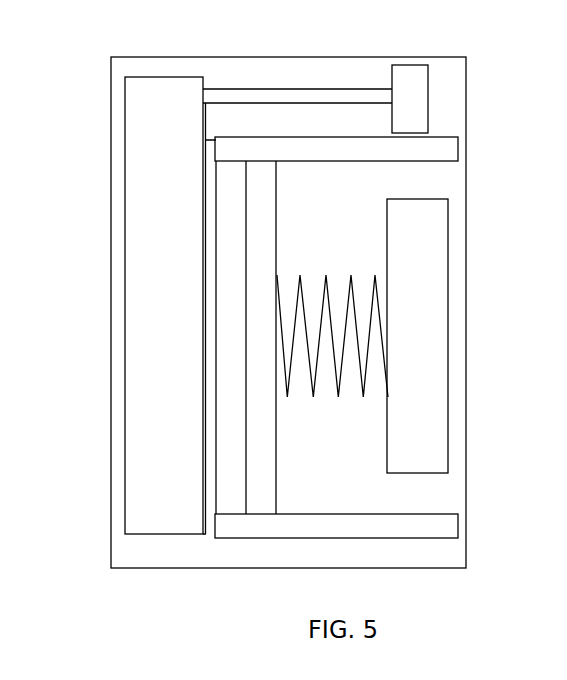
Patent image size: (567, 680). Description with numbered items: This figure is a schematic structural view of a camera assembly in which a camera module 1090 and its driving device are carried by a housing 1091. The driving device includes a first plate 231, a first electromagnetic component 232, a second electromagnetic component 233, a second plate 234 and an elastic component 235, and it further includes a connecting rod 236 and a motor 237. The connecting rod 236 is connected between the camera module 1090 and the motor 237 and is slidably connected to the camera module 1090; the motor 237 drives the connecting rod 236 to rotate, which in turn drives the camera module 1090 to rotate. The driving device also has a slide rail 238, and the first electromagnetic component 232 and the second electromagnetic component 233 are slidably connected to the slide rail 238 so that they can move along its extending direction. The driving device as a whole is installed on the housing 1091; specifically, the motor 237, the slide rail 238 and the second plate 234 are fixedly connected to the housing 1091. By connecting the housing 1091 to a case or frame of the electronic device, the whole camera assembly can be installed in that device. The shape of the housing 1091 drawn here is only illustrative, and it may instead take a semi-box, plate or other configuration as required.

The camera module 1090 is at (158, 153).
The housing 1091 is at (135, 557).
The first plate 231 is at (208, 258).
The first electromagnetic component 232 is at (227, 205).
The second electromagnetic component 233 is at (258, 238).
The second plate 234 is at (427, 303).
The elastic component 235 is at (307, 362).
The connecting rod 236 is at (283, 97).
The motor 237 is at (412, 88).
The slide rail 238 is at (442, 145).